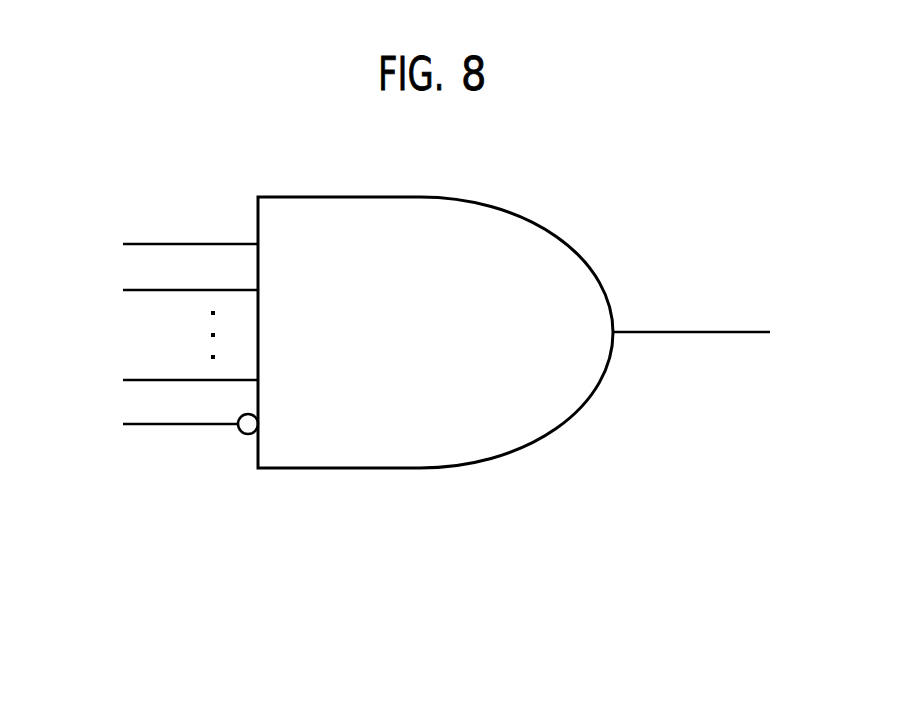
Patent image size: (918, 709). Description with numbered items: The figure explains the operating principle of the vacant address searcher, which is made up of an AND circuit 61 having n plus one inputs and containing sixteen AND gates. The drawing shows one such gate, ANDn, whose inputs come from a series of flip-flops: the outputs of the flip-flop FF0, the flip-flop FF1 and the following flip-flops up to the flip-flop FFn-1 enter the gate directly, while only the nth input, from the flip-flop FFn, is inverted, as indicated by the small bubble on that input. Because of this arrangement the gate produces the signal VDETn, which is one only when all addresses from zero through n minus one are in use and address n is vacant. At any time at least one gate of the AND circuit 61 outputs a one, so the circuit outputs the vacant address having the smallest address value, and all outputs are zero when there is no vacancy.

The AND circuit 61 is at (545, 230).
The flip-flop FF0 is at (162, 247).
The flip-flop FF1 is at (162, 293).
The flip-flop FFn-1 is at (150, 384).
The flip-flop FFn is at (162, 427).
The signal VDETn is at (725, 332).